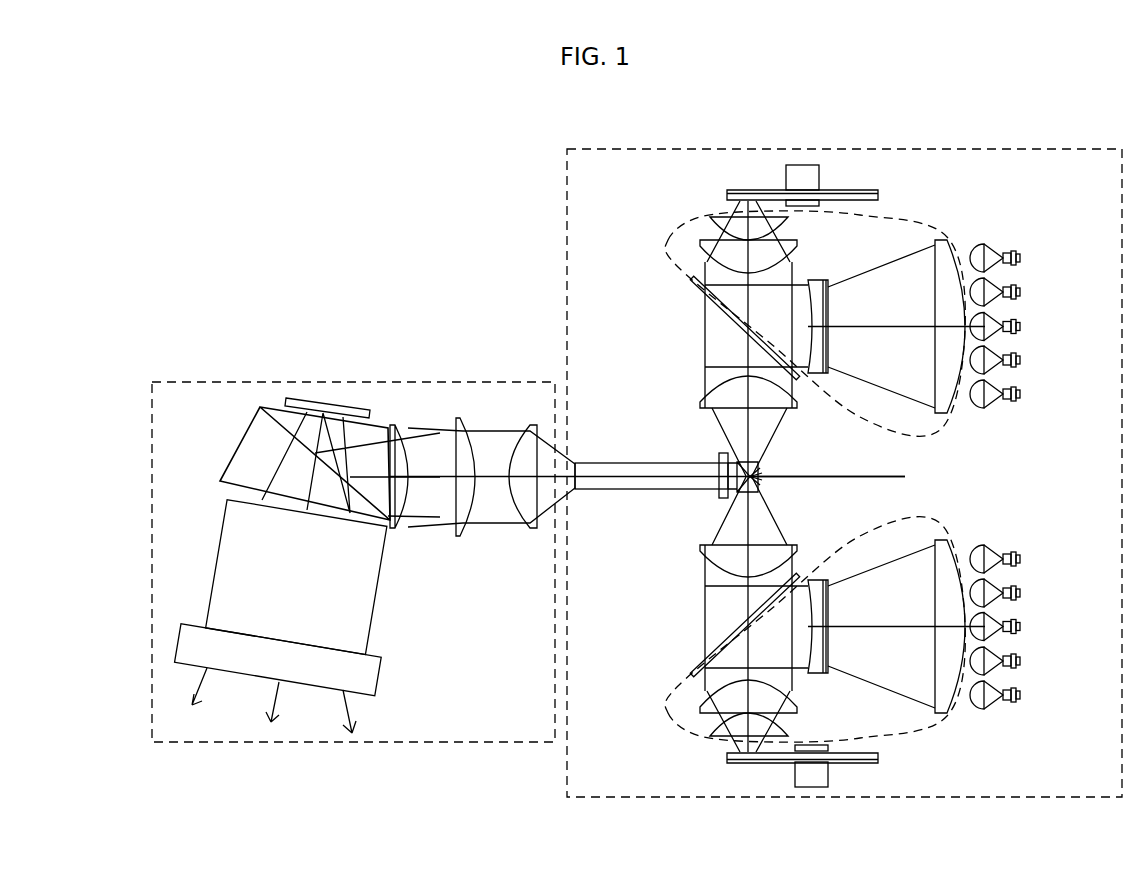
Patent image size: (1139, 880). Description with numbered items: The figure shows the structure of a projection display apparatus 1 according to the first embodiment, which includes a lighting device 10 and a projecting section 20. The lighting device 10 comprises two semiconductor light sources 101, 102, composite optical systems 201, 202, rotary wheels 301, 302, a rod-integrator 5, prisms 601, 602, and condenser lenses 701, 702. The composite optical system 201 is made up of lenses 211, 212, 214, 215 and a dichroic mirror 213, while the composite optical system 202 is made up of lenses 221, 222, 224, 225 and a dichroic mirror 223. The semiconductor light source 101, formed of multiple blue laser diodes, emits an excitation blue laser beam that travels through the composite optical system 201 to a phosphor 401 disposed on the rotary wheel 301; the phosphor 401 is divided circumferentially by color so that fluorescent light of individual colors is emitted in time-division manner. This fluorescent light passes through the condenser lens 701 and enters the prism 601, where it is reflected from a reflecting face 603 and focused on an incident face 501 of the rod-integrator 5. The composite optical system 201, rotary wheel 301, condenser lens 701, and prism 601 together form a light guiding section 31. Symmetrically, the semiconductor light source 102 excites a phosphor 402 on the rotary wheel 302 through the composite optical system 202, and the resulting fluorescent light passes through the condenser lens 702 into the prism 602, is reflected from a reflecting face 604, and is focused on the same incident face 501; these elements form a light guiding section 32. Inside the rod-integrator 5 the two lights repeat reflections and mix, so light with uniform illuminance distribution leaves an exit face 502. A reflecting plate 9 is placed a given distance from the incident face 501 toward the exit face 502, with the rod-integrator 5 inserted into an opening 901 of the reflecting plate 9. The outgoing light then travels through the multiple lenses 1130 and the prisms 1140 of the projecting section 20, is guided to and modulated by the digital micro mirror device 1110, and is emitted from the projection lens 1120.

The projection display apparatus 1 is at (281, 193).
The lighting device 10 is at (567, 208).
The projecting section 20 is at (172, 382).
The digital micro mirror device 1110 is at (328, 398).
The projection lens 1120 is at (215, 562).
The multiple lenses 1130 is at (537, 543).
The prisms 1140 is at (252, 393).
The rod-integrator 5 is at (648, 463).
The exit face 502 is at (575, 482).
The incident face 501 is at (860, 474).
The reflecting plate 9 is at (728, 496).
The opening 901 is at (719, 458).
The prism 601 is at (760, 468).
The prism 602 is at (760, 485).
The reflecting face 603 is at (762, 473).
The reflecting face 604 is at (762, 480).
The light guiding section 31 is at (940, 173).
The light guiding section 32 is at (945, 781).
The semiconductor light source 101 is at (1034, 326).
The semiconductor light source 102 is at (1034, 626).
The composite optical system 201 is at (945, 432).
The composite optical system 202 is at (945, 520).
The lens 211 is at (945, 240).
The lens 212 is at (810, 282).
The dichroic mirror 213 is at (692, 282).
The lens 214 is at (702, 248).
The lens 215 is at (712, 230).
The lens 221 is at (948, 713).
The lens 222 is at (820, 675).
The dichroic mirror 223 is at (692, 675).
The lens 224 is at (702, 708).
The lens 225 is at (712, 735).
The rotary wheel 301 is at (808, 168).
The rotary wheel 302 is at (815, 787).
The phosphor 401 is at (730, 203).
The phosphor 402 is at (735, 752).
The condenser lens 701 is at (712, 392).
The condenser lens 702 is at (705, 570).